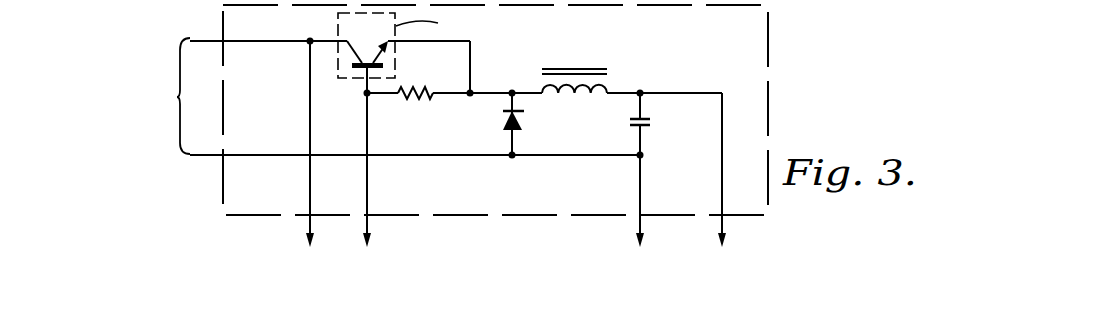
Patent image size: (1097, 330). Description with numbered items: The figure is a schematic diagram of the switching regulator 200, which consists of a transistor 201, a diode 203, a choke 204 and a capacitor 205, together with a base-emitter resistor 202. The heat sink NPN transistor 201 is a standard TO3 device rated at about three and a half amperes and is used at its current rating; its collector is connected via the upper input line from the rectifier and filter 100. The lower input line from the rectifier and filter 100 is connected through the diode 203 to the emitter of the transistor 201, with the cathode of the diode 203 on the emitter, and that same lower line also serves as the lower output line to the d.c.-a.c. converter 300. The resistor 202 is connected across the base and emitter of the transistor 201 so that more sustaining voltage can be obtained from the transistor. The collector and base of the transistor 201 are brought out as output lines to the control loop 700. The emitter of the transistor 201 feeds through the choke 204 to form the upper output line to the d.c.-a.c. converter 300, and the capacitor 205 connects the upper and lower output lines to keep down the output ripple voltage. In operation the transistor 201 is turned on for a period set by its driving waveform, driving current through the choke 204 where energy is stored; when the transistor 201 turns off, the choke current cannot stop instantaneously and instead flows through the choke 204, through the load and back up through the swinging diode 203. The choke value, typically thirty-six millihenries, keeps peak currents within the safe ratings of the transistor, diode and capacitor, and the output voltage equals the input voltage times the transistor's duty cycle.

The rectifier and filter 100 is at (362, 96).
The switching regulator 200 is at (572, 207).
The transistor 201 is at (372, 35).
The resistor 202 is at (454, 105).
The diode 203 is at (494, 124).
The choke 204 is at (632, 94).
The capacitor 205 is at (660, 124).
The d.c.-a.c. converter 300 is at (684, 184).
The control loop 700 is at (339, 155).